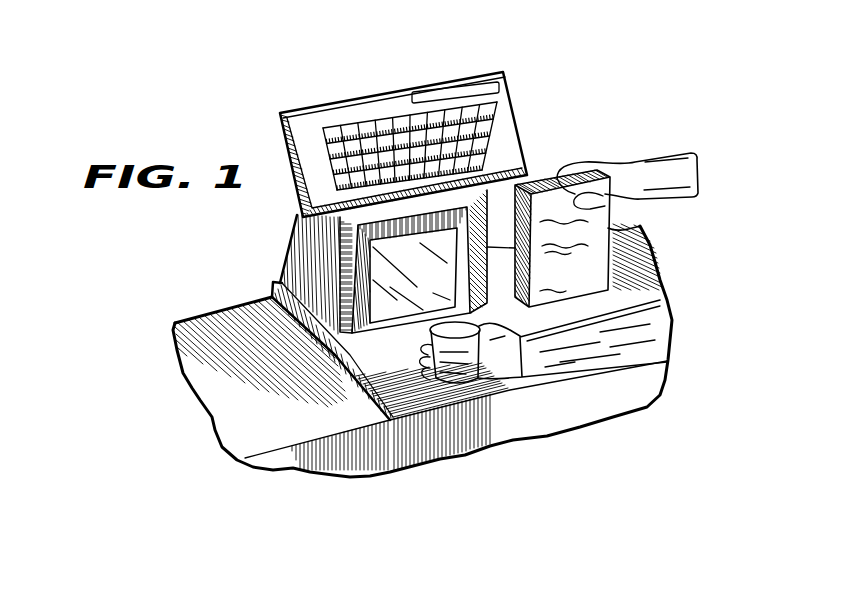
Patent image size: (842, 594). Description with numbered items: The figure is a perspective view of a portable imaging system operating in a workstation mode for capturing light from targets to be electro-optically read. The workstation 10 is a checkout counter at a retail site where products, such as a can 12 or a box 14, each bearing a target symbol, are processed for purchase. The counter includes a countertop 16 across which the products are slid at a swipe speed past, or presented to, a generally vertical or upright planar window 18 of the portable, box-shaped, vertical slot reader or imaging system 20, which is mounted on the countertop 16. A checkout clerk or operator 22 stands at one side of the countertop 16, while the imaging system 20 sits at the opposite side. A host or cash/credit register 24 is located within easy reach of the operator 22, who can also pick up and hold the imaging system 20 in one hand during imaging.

The workstation 10 is at (548, 163).
The can 12 is at (477, 383).
The box 14 is at (620, 210).
The countertop 16 is at (362, 372).
The window 18 is at (377, 312).
The imaging system 20 is at (372, 243).
The operator 22 is at (675, 320).
The cash/credit register 24 is at (380, 98).